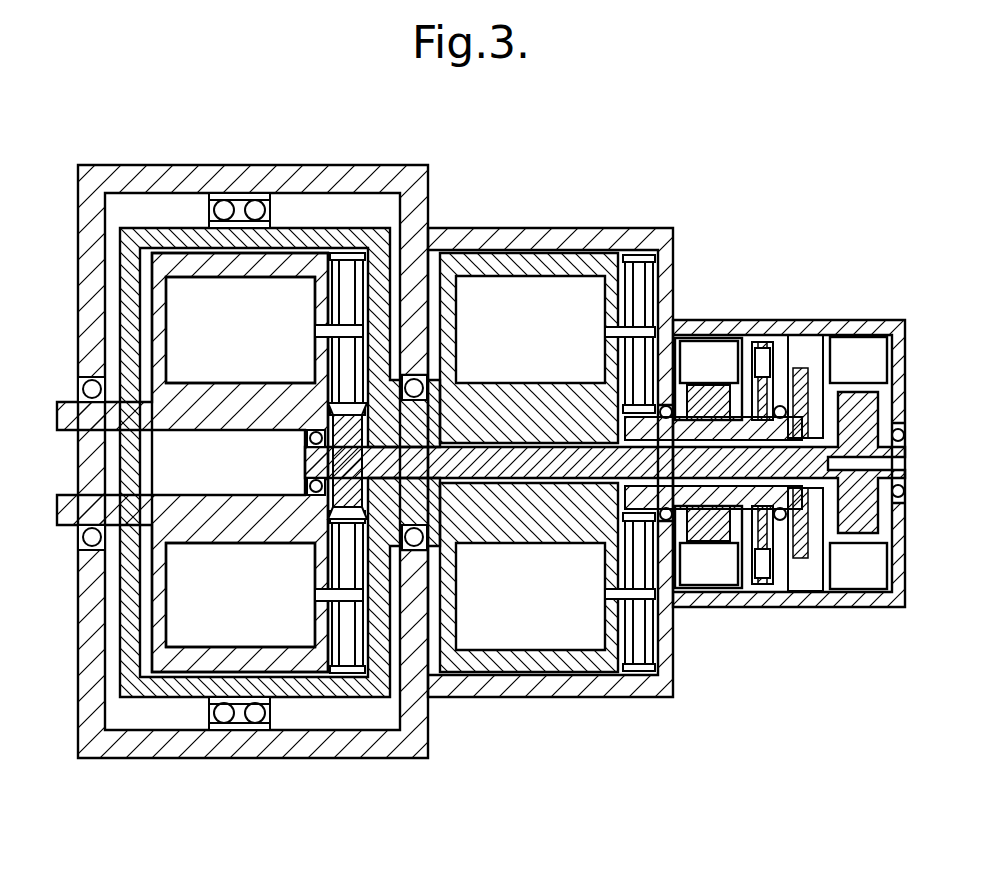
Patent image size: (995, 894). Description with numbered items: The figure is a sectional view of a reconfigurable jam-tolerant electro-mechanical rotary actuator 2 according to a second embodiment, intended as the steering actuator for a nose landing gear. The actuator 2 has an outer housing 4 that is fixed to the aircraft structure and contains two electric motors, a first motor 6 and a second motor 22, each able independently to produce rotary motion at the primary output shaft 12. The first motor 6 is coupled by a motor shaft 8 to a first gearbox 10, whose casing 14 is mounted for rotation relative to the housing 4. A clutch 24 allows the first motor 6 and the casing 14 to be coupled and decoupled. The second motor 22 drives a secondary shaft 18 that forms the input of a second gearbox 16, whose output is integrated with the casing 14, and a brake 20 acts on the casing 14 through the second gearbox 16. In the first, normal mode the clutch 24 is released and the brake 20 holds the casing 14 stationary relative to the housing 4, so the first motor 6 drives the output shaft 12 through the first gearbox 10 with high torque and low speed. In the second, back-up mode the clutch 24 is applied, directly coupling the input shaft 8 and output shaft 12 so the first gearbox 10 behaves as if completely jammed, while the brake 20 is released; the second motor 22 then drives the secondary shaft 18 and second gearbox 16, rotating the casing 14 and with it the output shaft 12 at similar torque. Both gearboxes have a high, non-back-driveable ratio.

The rotary actuator 2 is at (395, 788).
The outer housing 4 is at (401, 170).
The first motor 6 is at (863, 577).
The motor shaft 8 is at (305, 463).
The first gearbox 10 is at (258, 607).
The primary output shaft 12 is at (65, 413).
The casing 14 is at (132, 238).
The second gearbox 16 is at (528, 288).
The secondary shaft 18 is at (705, 532).
The brake 20 is at (768, 575).
The second motor 22 is at (722, 573).
The clutch 24 is at (808, 544).